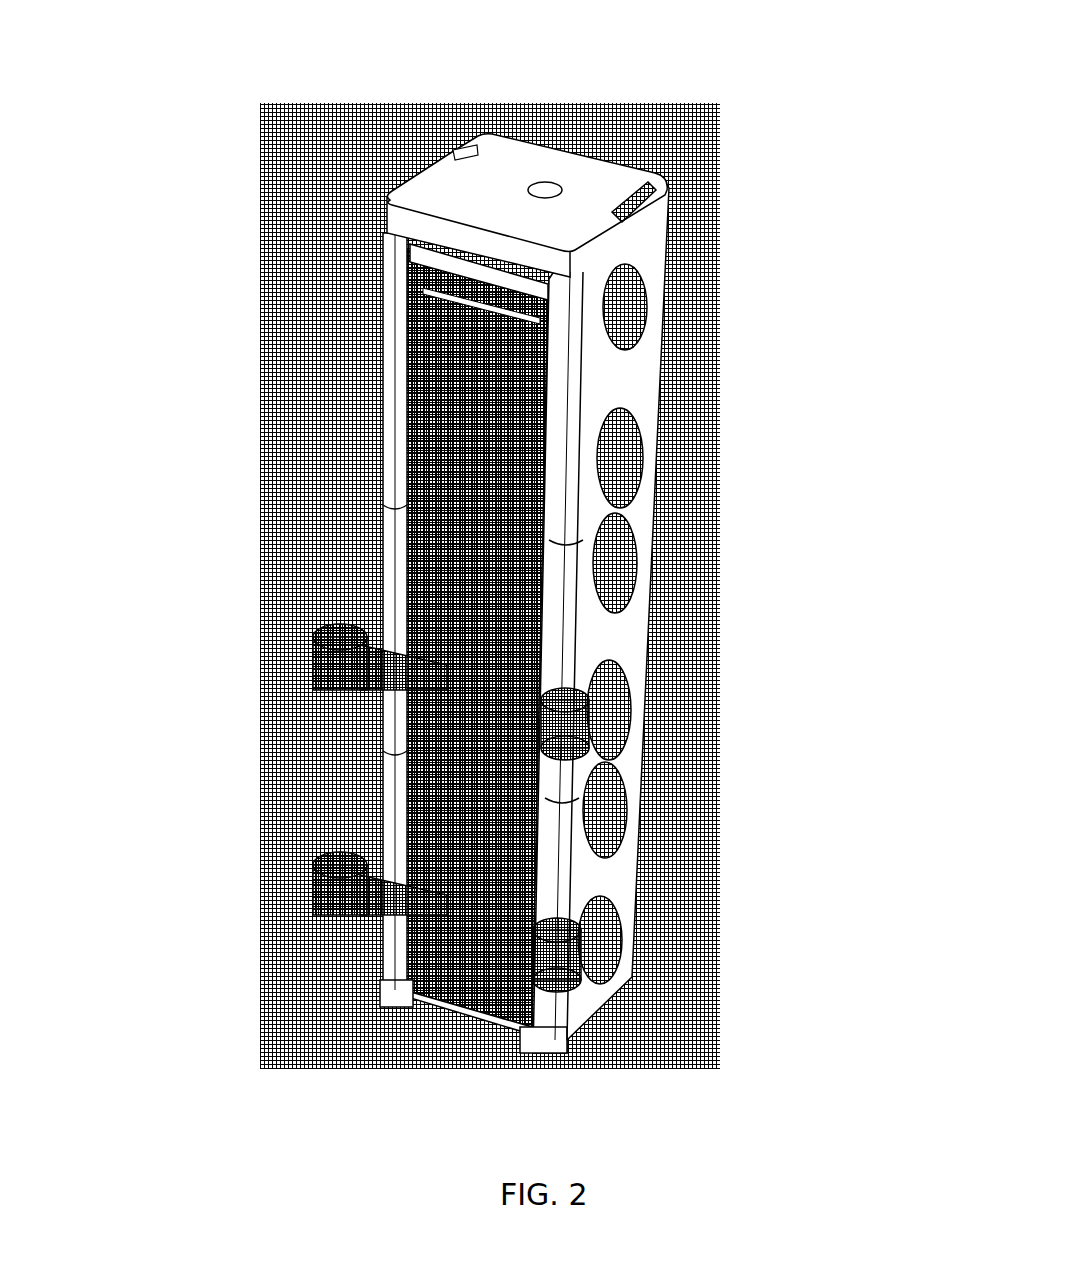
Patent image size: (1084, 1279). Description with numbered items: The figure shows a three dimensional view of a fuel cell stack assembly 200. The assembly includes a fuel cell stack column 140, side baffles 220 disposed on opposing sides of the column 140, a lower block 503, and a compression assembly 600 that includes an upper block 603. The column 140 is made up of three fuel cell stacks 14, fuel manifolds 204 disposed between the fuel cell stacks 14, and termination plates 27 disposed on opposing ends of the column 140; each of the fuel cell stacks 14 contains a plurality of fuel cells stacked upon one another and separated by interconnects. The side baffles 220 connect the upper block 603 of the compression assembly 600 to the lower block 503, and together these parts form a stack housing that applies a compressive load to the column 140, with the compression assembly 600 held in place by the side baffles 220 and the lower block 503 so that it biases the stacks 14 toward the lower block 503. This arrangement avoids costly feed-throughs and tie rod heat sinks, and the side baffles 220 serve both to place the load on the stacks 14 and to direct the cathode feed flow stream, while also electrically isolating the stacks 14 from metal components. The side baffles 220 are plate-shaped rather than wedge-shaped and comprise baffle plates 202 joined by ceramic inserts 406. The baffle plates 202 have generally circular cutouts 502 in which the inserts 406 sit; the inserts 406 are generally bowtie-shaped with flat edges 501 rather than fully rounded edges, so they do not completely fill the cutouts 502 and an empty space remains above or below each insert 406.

The fuel cell stack assembly 200 is at (528, 53).
The upper block 603 is at (568, 187).
The compression assembly 600 is at (372, 220).
The flat edges 501 is at (620, 222).
The circular cutouts 502 is at (618, 325).
The termination plates 27 is at (470, 333).
The fuel cell stacks 14 is at (467, 393).
The ceramic inserts 406 is at (622, 483).
The baffle plates 202 is at (635, 614).
The side baffles 220 is at (842, 457).
The fuel cell stack column 140 is at (173, 247).
The fuel manifolds 204 is at (363, 685).
The lower block 503 is at (615, 972).